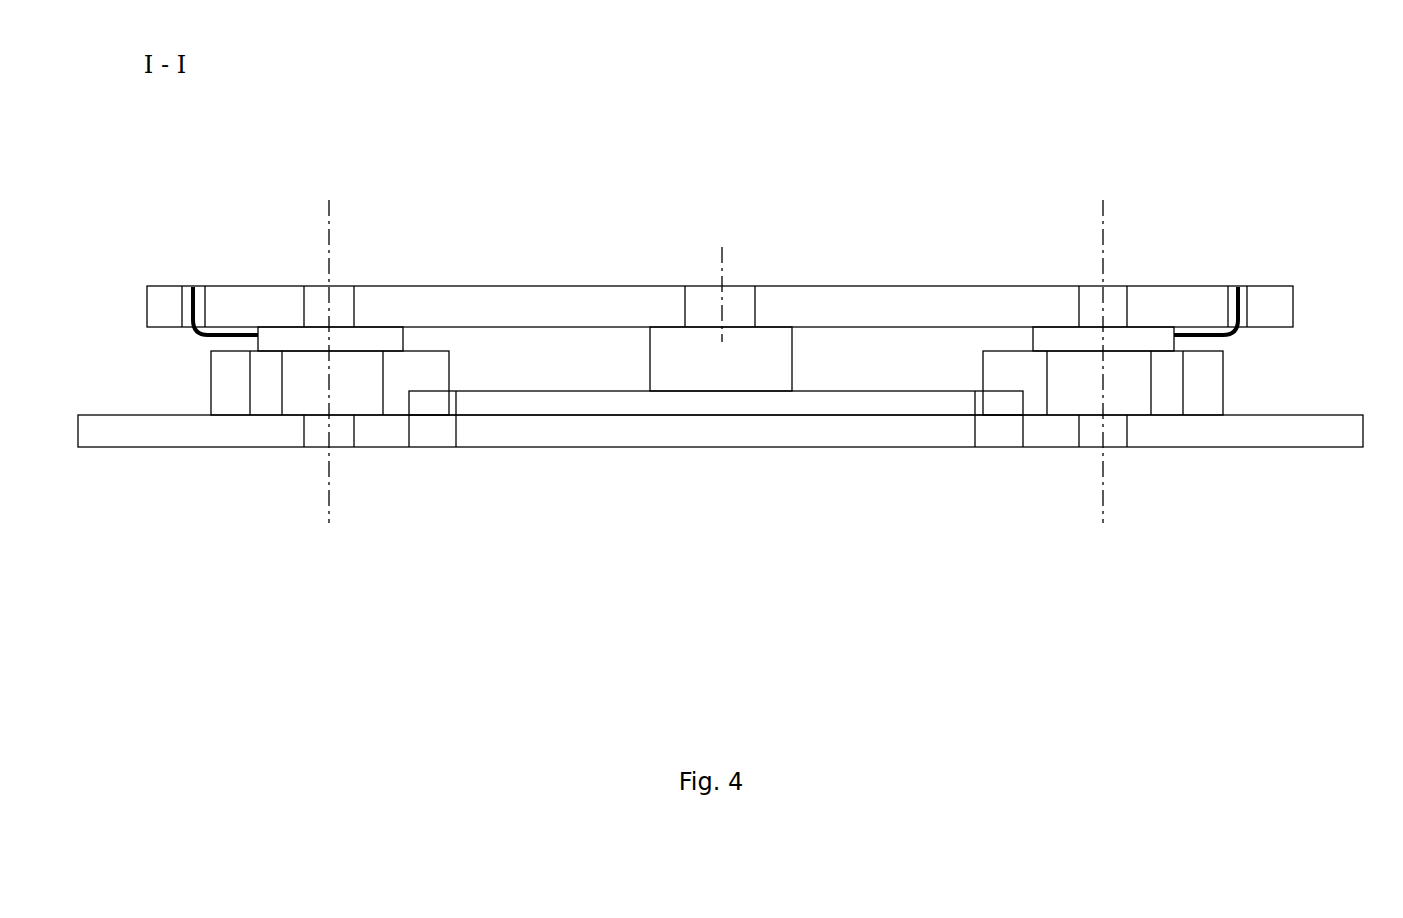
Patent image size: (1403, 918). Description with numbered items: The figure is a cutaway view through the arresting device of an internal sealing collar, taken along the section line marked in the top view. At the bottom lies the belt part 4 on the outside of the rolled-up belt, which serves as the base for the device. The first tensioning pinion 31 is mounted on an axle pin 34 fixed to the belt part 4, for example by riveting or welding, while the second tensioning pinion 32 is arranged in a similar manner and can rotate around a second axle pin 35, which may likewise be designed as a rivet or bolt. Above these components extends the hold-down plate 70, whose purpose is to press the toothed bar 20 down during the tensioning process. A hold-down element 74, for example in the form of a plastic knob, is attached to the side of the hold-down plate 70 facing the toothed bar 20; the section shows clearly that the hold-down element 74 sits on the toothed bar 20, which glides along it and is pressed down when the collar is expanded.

The belt part on the outside 4 is at (593, 435).
The toothed bar 20 is at (902, 405).
The first tensioning pinion 31 is at (254, 432).
The second tensioning pinion 32 is at (1179, 433).
The axle pin 34 is at (297, 392).
The axle pin 35 is at (1133, 396).
The hold-down plate 70 is at (502, 297).
The hold-down element 74 is at (768, 342).